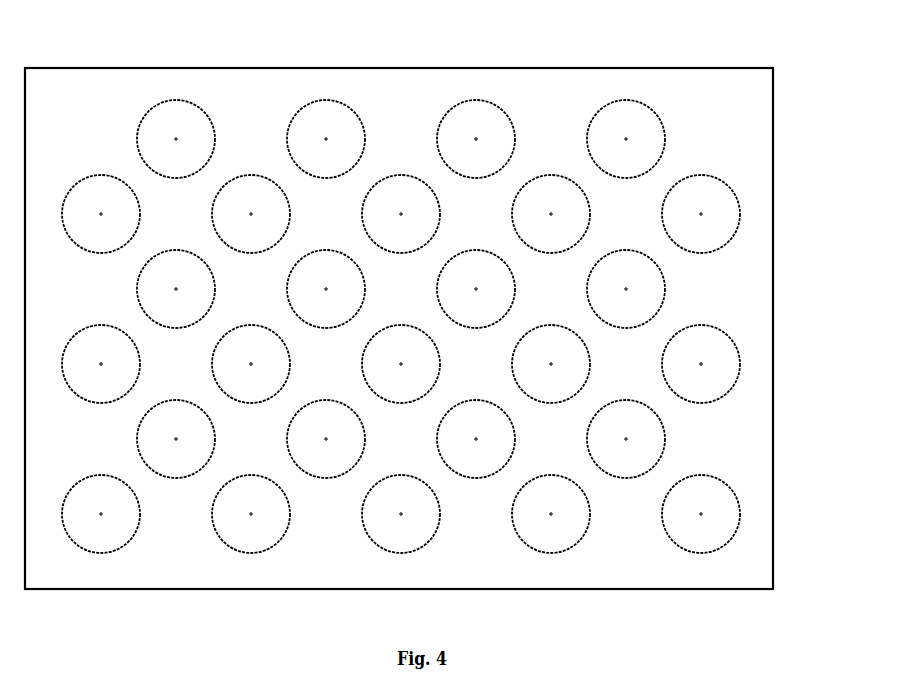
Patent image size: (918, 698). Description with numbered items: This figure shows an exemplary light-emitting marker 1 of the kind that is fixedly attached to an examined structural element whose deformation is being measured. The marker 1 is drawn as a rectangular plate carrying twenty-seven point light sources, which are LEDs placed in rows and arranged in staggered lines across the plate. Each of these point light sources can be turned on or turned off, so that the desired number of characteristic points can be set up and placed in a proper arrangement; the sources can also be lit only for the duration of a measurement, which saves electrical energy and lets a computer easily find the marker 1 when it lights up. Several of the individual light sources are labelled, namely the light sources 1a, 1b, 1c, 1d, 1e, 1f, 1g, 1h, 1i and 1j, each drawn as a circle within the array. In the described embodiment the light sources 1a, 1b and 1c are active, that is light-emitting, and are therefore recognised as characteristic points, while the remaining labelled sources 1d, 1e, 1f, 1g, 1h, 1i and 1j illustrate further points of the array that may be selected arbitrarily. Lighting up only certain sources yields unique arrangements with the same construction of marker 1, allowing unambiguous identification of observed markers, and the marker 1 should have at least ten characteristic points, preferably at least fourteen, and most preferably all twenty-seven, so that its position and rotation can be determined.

The marker 1 is at (399, 328).
The light source 1a is at (90, 202).
The light source 1b is at (194, 135).
The light source 1c is at (174, 268).
The hole 1d is at (337, 277).
The hole 1e is at (463, 125).
The hole 1f is at (649, 143).
The hole 1g is at (340, 444).
The hole 1h is at (572, 362).
The hole 1i is at (653, 428).
The hole 1j is at (569, 532).